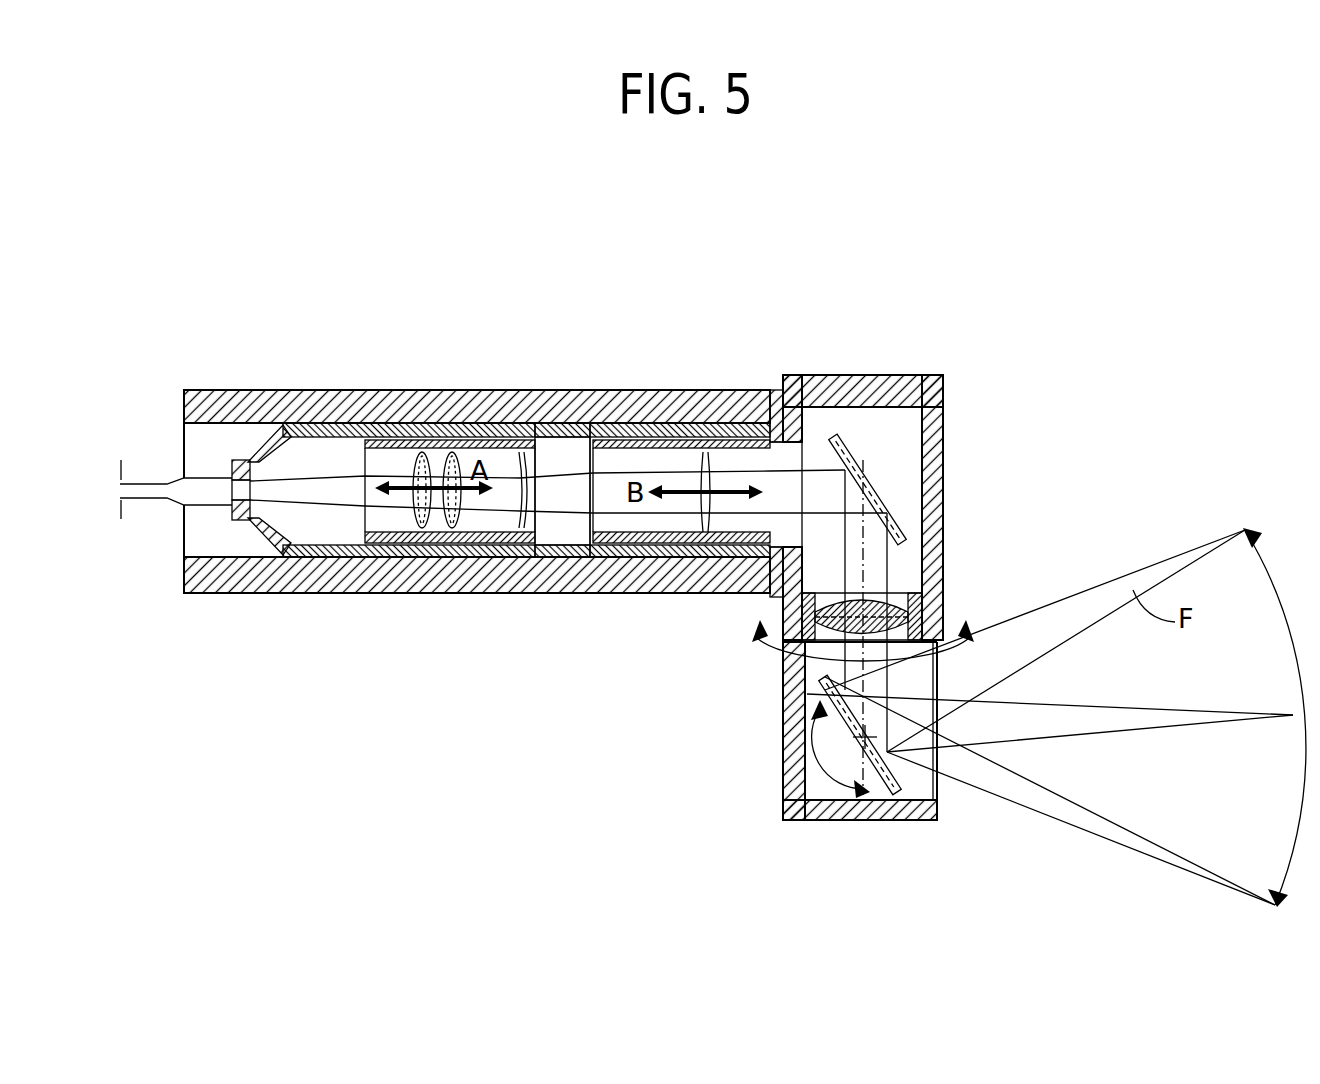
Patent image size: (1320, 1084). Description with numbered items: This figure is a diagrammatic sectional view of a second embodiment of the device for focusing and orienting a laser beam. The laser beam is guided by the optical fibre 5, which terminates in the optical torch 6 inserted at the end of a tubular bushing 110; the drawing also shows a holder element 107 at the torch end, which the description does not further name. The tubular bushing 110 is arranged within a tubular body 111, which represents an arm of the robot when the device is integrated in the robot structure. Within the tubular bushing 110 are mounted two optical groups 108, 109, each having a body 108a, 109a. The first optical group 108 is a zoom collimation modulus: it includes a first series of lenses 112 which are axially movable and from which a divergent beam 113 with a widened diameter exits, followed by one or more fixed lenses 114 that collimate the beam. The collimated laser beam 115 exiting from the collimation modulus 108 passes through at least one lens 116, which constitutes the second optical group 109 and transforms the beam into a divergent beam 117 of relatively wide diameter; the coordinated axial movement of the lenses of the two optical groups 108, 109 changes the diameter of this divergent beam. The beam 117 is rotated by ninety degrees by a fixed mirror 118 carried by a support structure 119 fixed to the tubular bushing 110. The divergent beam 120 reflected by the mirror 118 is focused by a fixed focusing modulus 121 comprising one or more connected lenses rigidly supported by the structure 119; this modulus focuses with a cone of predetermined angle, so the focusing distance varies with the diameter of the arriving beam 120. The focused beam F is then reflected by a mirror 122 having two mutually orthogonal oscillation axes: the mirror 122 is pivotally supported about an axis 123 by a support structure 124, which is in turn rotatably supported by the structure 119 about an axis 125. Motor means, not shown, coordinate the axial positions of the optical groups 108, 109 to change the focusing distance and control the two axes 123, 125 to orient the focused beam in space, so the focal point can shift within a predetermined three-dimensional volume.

The optical fibre 5 is at (148, 498).
The optical torch 6 is at (205, 477).
The fiber holder 107 is at (297, 493).
The optical group 108 is at (392, 557).
The body 108a is at (340, 392).
The optical group 109 is at (657, 557).
The body 109a is at (627, 440).
The tubular bushing 110 is at (547, 558).
The tubular body 111 is at (231, 390).
The first series of lenses 112 is at (463, 452).
The divergent beam 113 is at (500, 455).
The fixed lenses 114 is at (545, 470).
The collimated laser beam 115 is at (558, 470).
The lens 116 is at (718, 455).
The divergent beam 117 is at (817, 483).
The fixed mirror 118 is at (872, 490).
The support structure 119 is at (943, 437).
The divergent beam 120 is at (945, 543).
The focusing modulus 121 is at (945, 573).
The mirror 122 is at (878, 815).
The axis 123 is at (865, 737).
The support structure 124 is at (820, 820).
The axis 125 is at (805, 694).